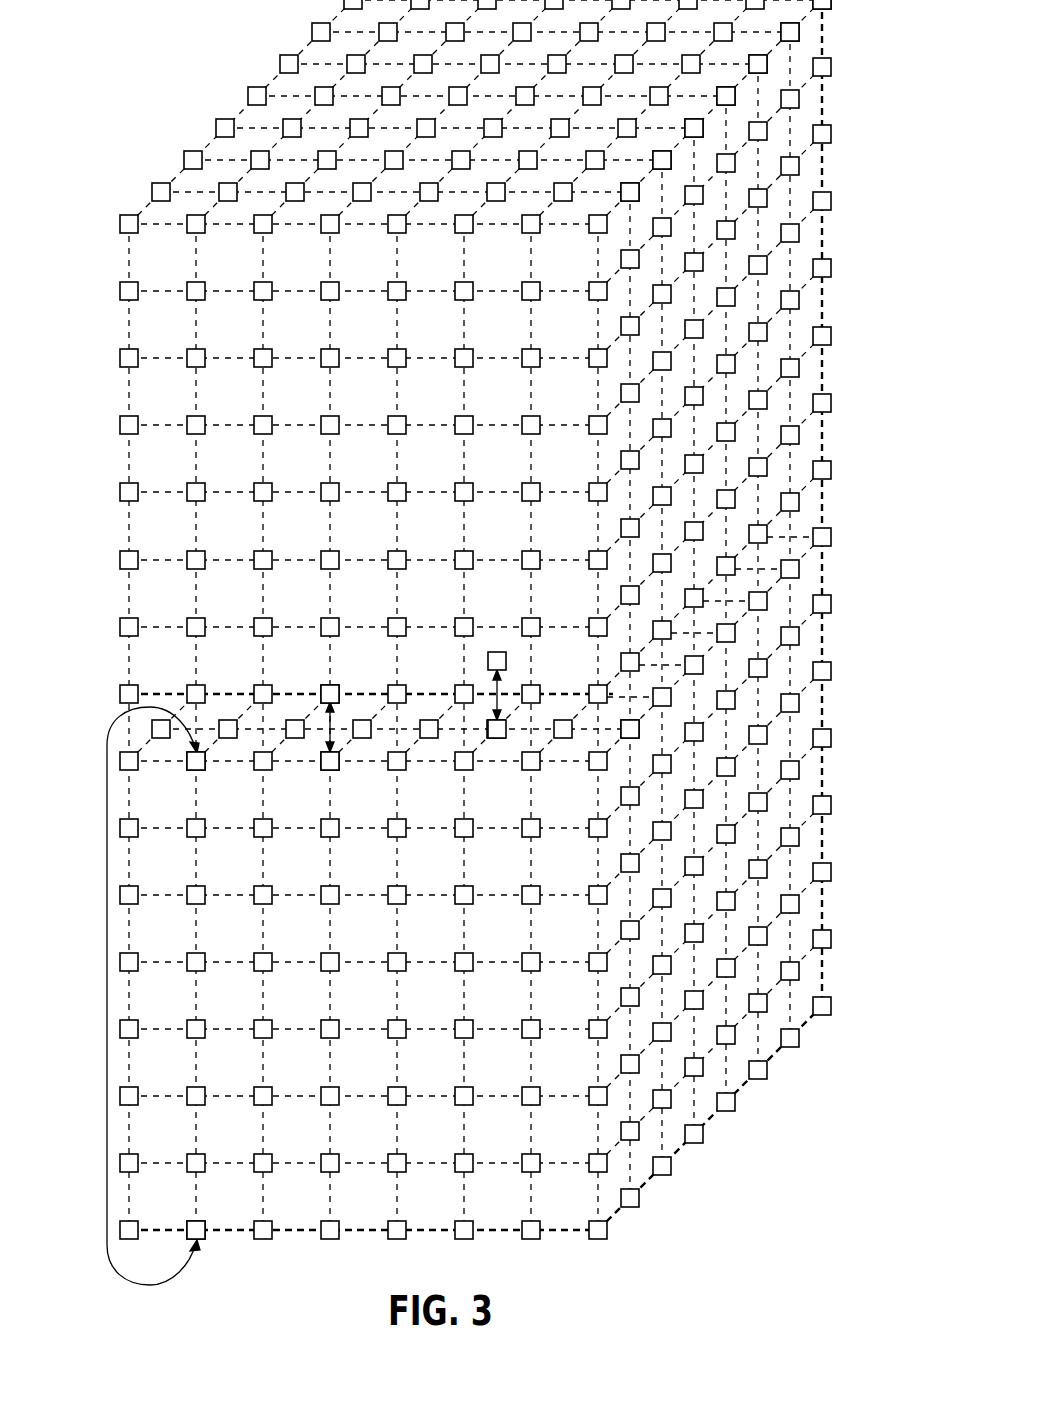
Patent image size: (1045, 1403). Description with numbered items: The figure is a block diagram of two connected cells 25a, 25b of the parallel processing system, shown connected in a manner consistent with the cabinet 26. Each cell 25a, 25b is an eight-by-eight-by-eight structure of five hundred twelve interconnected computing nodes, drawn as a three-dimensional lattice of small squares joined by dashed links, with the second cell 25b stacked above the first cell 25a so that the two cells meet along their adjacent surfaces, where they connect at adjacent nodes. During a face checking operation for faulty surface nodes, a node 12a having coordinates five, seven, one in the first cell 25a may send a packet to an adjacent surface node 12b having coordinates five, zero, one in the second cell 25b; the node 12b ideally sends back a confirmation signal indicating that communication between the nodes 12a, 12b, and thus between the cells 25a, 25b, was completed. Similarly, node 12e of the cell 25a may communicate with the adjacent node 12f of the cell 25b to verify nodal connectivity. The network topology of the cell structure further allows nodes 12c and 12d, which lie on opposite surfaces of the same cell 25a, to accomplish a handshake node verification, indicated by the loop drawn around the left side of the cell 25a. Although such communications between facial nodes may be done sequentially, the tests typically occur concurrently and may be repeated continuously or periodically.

The cabinet 26 is at (136, 52).
The first cell 25a is at (88, 749).
The second cell 25b is at (86, 209).
The node 12a is at (499, 740).
The adjacent surface node 12b is at (497, 651).
The node 12c is at (205, 770).
The node 12d is at (198, 1241).
The node 12e is at (339, 770).
The adjacent node 12f is at (340, 690).